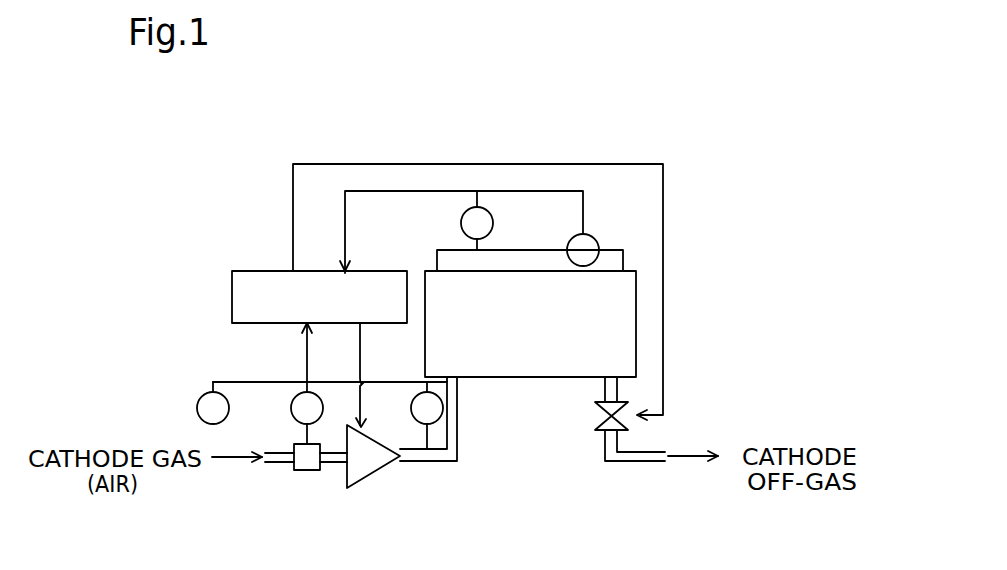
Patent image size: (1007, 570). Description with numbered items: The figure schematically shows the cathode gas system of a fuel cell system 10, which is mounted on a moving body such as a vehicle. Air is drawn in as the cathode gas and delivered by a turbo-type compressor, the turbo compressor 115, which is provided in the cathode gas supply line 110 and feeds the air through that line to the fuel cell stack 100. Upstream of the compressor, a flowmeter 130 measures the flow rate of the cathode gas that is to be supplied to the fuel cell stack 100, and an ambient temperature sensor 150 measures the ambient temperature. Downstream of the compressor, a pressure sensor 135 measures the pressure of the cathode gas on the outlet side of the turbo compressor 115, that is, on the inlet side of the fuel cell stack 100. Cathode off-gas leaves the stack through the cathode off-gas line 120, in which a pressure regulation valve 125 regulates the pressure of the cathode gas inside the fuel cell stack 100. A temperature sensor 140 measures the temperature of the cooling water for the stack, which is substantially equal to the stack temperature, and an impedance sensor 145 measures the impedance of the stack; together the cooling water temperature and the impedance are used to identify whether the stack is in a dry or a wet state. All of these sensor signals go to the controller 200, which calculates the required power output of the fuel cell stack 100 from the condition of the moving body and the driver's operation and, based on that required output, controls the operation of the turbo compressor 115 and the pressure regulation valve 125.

The fuel cell system 10 is at (712, 153).
The fuel cell stack 100 is at (636, 287).
The cathode gas supply line 110 is at (457, 437).
The turbo compressor 115 is at (372, 475).
The cathode off-gas line 120 is at (621, 462).
The pressure regulation valve 125 is at (595, 428).
The flowmeter 130 is at (295, 366).
The pressure sensor 135 is at (418, 393).
The temperature sensor 140 is at (494, 228).
The impedance sensor 145 is at (594, 238).
The ambient temperature sensor 150 is at (201, 396).
The controller 200 is at (369, 270).